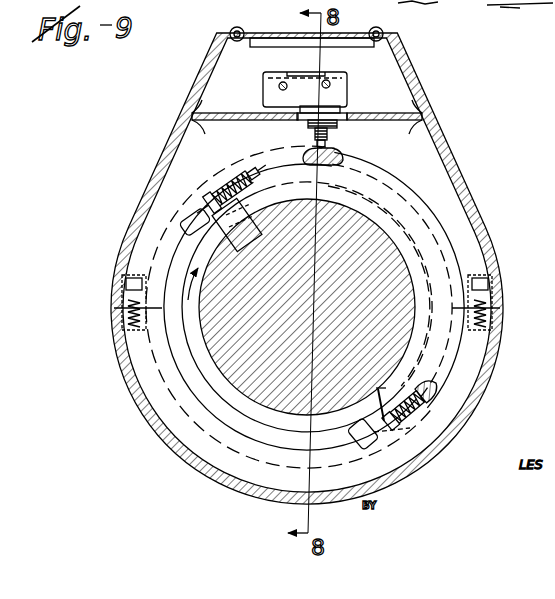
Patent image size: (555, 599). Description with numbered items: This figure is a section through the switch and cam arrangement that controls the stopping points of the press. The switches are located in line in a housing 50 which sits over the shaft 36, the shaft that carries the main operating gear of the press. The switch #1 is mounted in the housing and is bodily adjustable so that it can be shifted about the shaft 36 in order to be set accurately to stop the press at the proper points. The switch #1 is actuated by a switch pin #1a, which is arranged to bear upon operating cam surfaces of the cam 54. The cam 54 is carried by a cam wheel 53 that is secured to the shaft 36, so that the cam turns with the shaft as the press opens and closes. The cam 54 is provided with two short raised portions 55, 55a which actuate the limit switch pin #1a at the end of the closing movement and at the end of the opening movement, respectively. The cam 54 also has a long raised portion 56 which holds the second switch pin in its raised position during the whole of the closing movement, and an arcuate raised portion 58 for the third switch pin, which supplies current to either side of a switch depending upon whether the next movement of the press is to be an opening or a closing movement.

The housing 50 is at (446, 140).
The switch # 1 is at (322, 82).
The switch pin # 1a is at (329, 136).
The short raised portion 55 is at (344, 157).
The short raised portion 55a is at (431, 407).
The cam 54 is at (438, 208).
The long raised portion 56 is at (447, 230).
The cam wheel 53 is at (233, 402).
The shaft 36 is at (398, 273).
The arcuate raised portion 58 is at (230, 165).